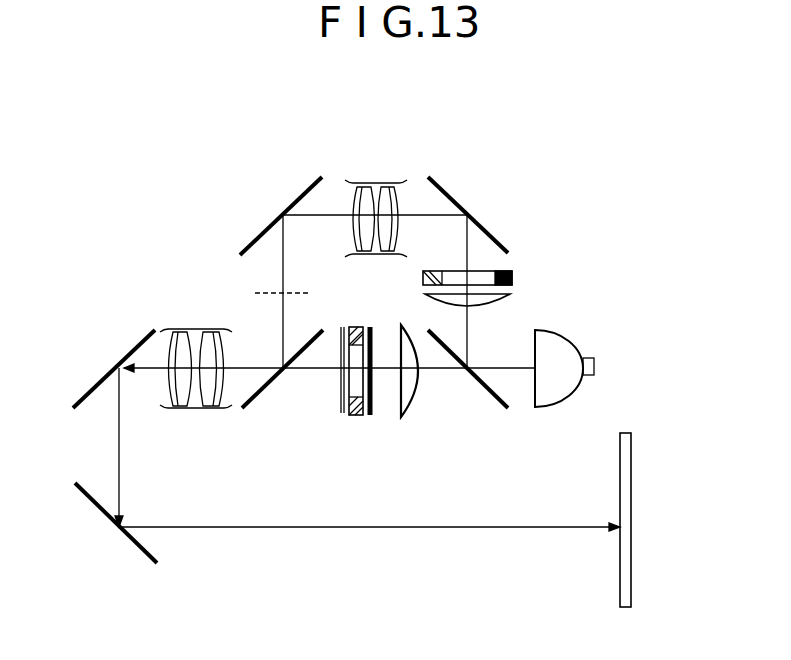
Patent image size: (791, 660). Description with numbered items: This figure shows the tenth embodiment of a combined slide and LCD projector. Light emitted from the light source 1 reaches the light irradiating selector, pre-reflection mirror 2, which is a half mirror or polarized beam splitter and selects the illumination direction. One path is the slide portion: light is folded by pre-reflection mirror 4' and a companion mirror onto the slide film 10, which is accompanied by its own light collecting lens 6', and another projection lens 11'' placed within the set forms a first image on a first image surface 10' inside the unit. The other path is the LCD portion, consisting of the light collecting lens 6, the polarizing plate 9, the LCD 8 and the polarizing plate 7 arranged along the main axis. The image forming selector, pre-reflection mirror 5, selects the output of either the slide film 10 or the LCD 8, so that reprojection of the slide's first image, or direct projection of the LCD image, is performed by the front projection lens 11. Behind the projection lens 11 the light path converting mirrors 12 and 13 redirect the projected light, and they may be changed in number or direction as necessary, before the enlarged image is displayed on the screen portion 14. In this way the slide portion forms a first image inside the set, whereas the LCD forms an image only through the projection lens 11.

The light source 1 is at (550, 388).
The pre-reflection mirror 2 is at (493, 397).
The pre-reflection mirror 4' is at (468, 207).
The pre-reflection mirror 5 is at (260, 390).
The light collecting lens 6 is at (408, 395).
The light collecting lens 6' is at (496, 300).
The polarizing plate 7 is at (373, 415).
The LCD 8 is at (350, 415).
The polarizing plate 9 is at (342, 400).
The slide film 10 is at (496, 277).
The first image surface 10' is at (257, 279).
The projection lens 11 is at (196, 397).
The projection lens 11'' is at (376, 197).
The pre-reflection mirror 12 is at (103, 370).
The mirror 13 is at (93, 503).
The screen portion 14 is at (631, 527).